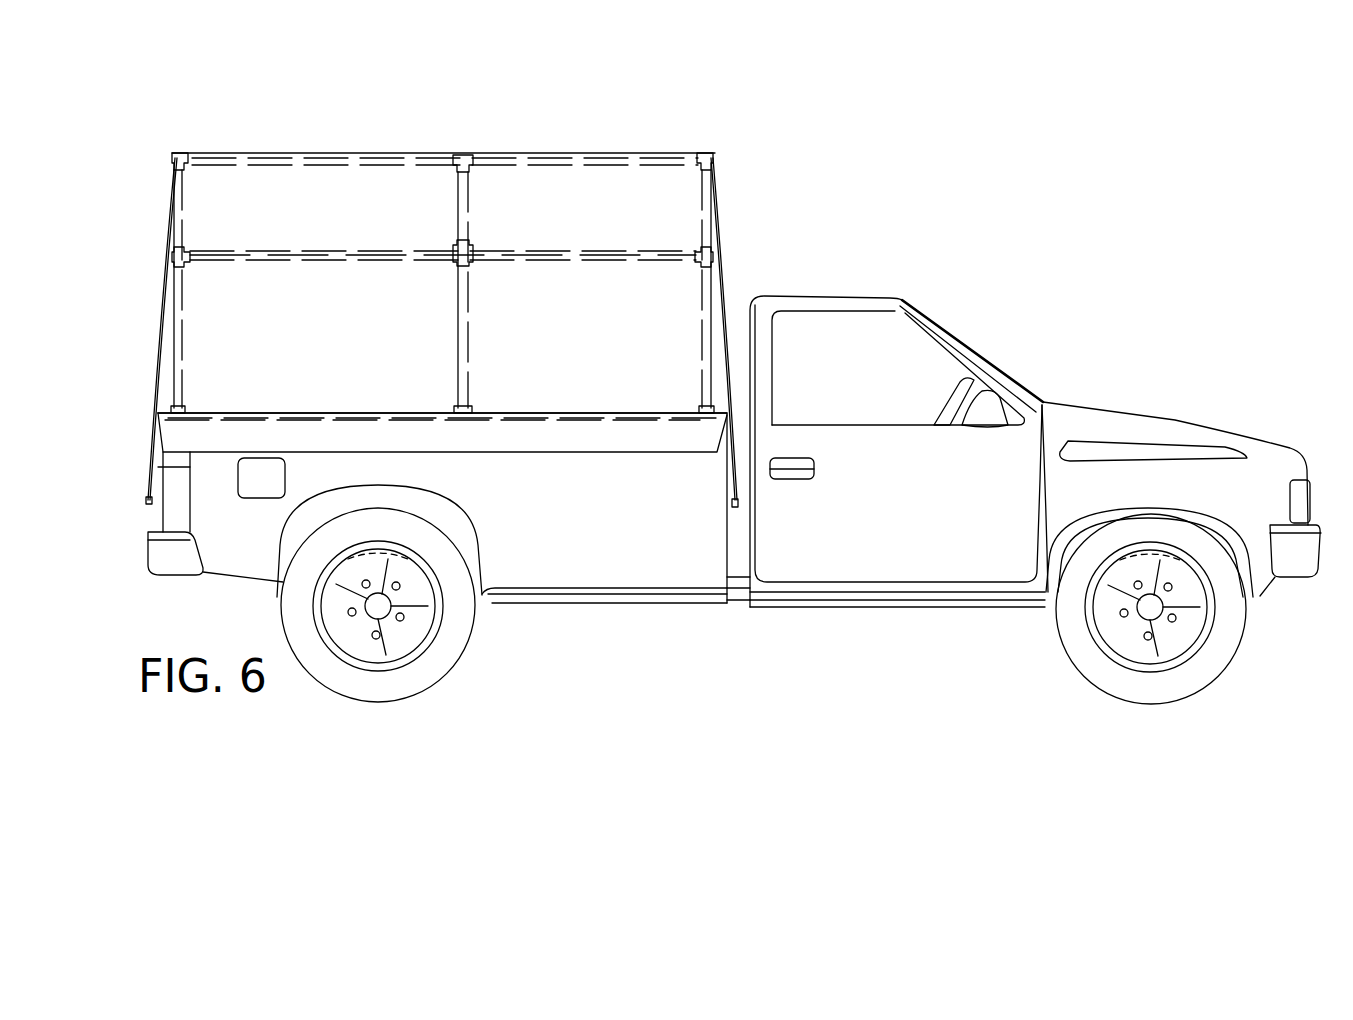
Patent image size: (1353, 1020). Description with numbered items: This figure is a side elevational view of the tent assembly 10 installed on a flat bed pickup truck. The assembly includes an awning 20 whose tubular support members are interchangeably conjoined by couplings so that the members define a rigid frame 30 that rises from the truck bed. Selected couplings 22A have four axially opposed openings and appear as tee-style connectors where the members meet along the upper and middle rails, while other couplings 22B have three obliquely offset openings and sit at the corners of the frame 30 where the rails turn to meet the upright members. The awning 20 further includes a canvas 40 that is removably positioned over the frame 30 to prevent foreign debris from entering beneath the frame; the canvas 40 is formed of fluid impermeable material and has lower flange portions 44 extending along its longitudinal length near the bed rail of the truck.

The tent assembly 10 is at (787, 137).
The awning 20 is at (308, 128).
The couplings with four axially opposed openings 22A is at (455, 250).
The couplings with three obliquely offset openings 22B is at (175, 255).
The rigid frame 30 is at (458, 330).
The canvas 40 is at (153, 325).
The lower flange portions 44 is at (225, 432).